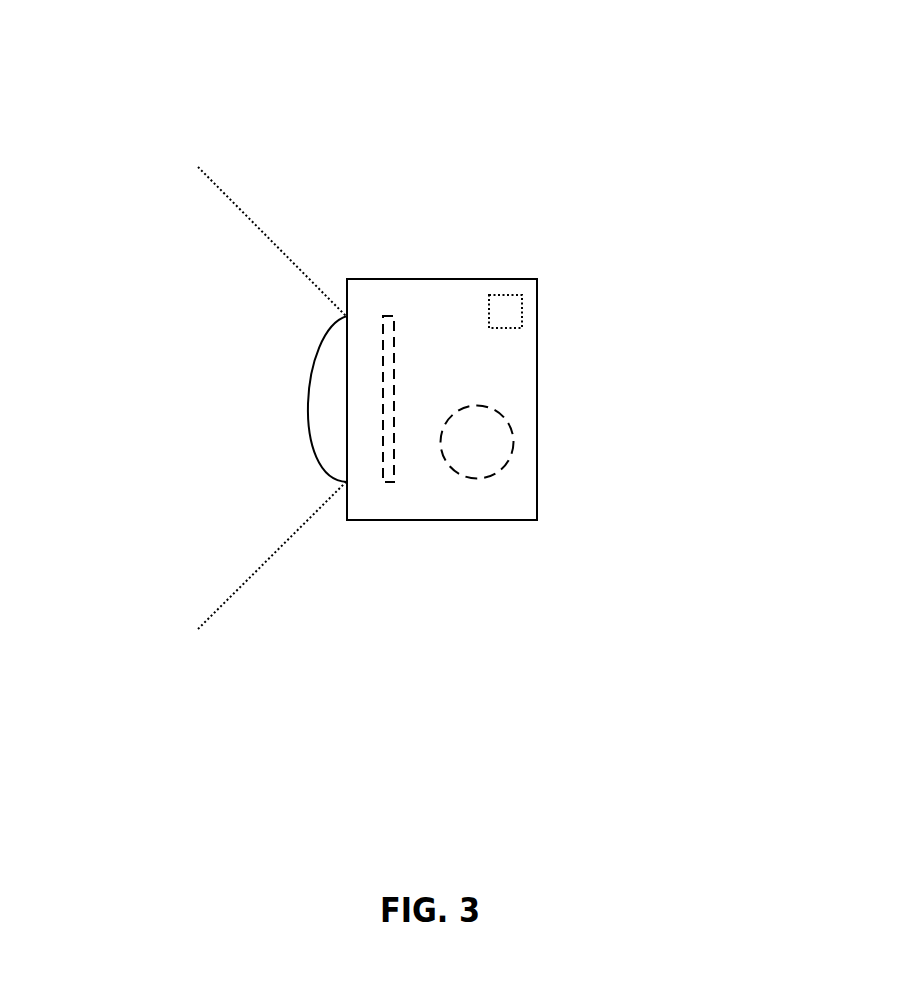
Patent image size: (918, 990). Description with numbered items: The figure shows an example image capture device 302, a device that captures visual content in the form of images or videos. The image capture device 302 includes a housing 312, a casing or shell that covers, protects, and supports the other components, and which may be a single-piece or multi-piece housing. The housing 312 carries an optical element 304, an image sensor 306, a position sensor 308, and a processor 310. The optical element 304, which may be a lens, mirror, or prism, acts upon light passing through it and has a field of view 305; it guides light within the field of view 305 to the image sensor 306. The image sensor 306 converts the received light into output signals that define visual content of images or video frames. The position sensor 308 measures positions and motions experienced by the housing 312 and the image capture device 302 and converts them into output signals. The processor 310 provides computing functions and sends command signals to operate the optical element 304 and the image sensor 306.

The image capture device 302 is at (505, 140).
The optical element 304 is at (322, 473).
The field of view 305 is at (274, 267).
The image sensor 306 is at (384, 316).
The position sensor 308 is at (522, 317).
The processor 310 is at (513, 443).
The housing 312 is at (453, 522).